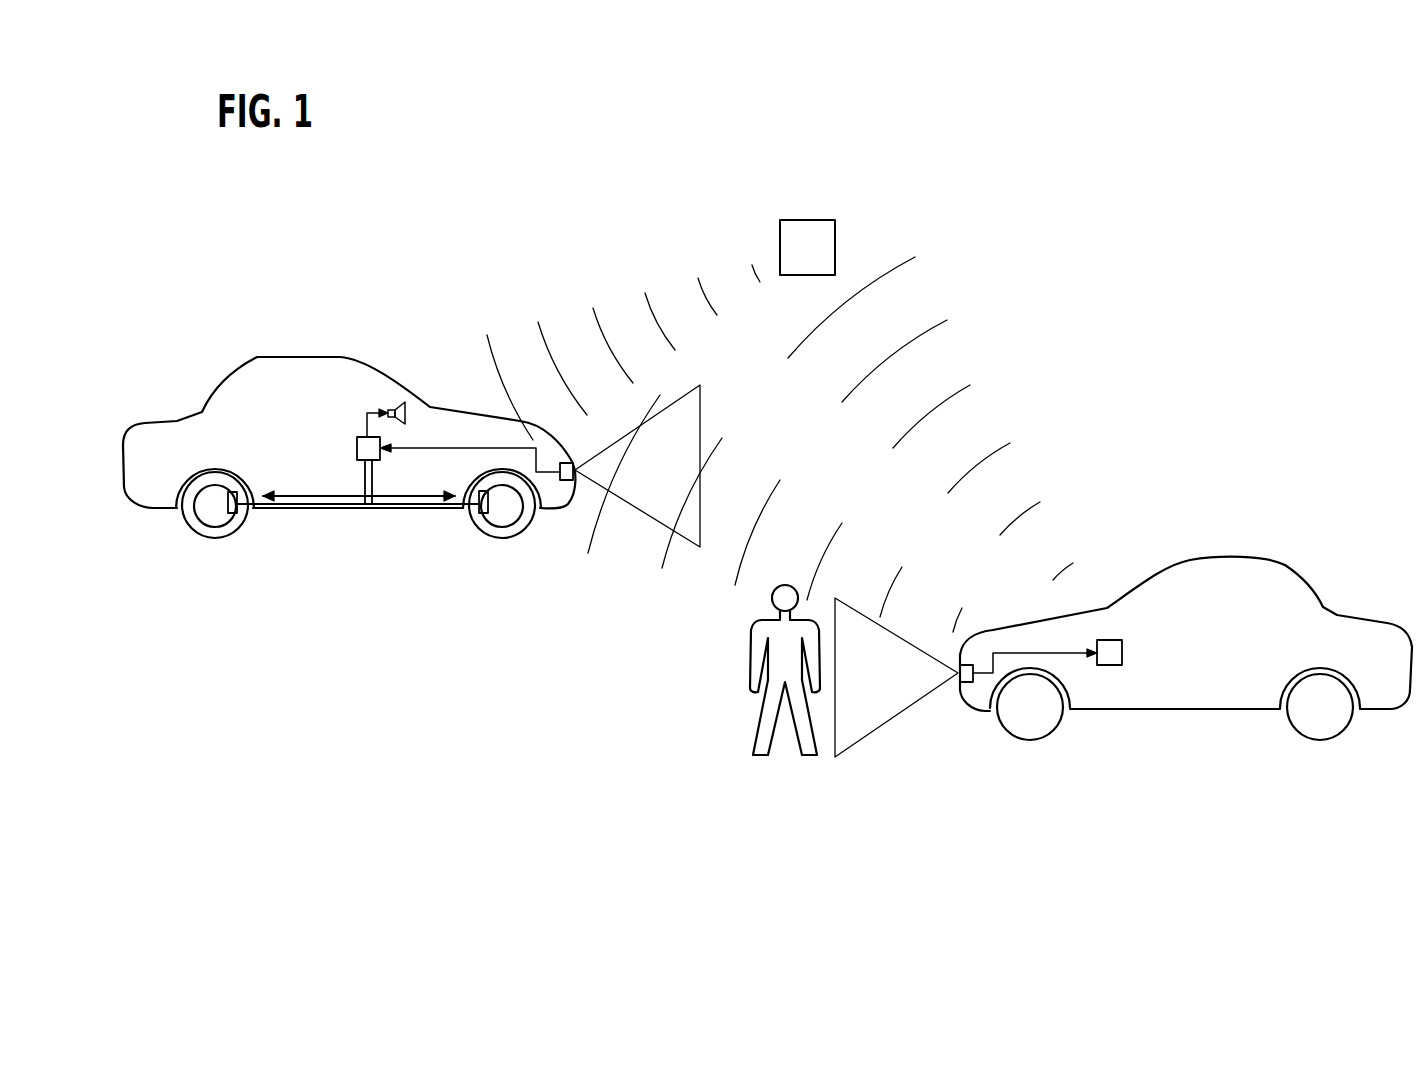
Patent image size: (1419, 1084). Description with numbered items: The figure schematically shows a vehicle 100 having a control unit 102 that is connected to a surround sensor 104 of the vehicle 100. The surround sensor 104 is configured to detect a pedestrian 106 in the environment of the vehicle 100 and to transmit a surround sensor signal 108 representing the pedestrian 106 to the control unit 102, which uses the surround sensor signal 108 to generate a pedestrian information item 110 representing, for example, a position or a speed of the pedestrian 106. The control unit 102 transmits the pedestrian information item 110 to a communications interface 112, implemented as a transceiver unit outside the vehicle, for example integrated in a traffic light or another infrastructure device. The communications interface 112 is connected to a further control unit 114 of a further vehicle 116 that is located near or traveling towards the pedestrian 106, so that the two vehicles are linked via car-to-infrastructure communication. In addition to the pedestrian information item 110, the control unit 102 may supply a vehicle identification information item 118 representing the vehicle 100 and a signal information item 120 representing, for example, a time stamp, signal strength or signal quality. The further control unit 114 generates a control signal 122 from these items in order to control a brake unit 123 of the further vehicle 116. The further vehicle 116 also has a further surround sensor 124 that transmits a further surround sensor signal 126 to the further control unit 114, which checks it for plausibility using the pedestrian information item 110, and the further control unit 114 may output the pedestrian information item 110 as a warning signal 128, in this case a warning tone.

The vehicle 100 is at (1233, 555).
The control unit 102 is at (1123, 652).
The surround sensor 104 is at (966, 688).
The pedestrian 106 is at (752, 665).
The surround sensor signal 108 is at (1027, 653).
The pedestrian information item 110 is at (547, 343).
The communications interface 112 is at (808, 220).
The further control unit 114 is at (357, 448).
The further vehicle 116 is at (290, 353).
The vehicle identification information item 118 is at (662, 560).
The signal information item 120 is at (985, 452).
The control signal 122 is at (380, 504).
The brake unit 123 is at (240, 513).
The further surround sensor 124 is at (567, 483).
The further surround sensor signal 126 is at (545, 452).
The warning signal 128 is at (367, 425).